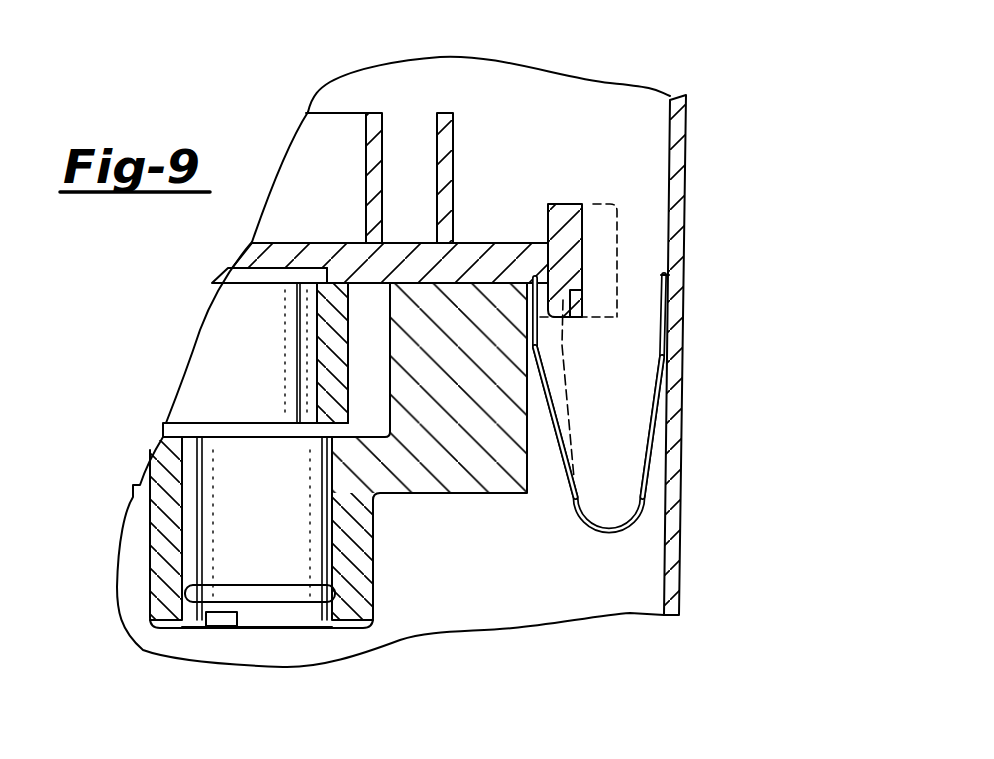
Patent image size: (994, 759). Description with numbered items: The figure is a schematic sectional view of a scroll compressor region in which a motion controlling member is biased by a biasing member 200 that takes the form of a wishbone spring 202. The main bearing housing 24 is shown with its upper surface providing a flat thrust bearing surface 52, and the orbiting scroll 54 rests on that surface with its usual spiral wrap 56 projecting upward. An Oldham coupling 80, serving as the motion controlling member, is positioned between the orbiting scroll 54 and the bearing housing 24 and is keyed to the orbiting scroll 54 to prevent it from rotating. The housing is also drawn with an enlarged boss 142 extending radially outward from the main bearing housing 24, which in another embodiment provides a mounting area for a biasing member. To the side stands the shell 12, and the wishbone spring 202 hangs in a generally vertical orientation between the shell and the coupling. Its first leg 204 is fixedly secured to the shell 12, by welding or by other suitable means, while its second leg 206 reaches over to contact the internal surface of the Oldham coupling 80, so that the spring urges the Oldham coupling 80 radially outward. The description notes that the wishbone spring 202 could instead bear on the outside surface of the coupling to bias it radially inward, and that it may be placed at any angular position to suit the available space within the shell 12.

The shell 12 is at (676, 150).
The main bearing housing 24 is at (172, 537).
The thrust bearing surface 52 is at (521, 290).
The orbiting scroll 54 is at (497, 253).
The spiral wrap 56 is at (443, 178).
The Oldham coupling 80 is at (583, 273).
The enlarged boss 142 is at (472, 452).
The biasing member 200 is at (268, 171).
The wishbone spring 202 is at (609, 535).
The first leg 204 is at (652, 490).
The second leg 206 is at (552, 405).